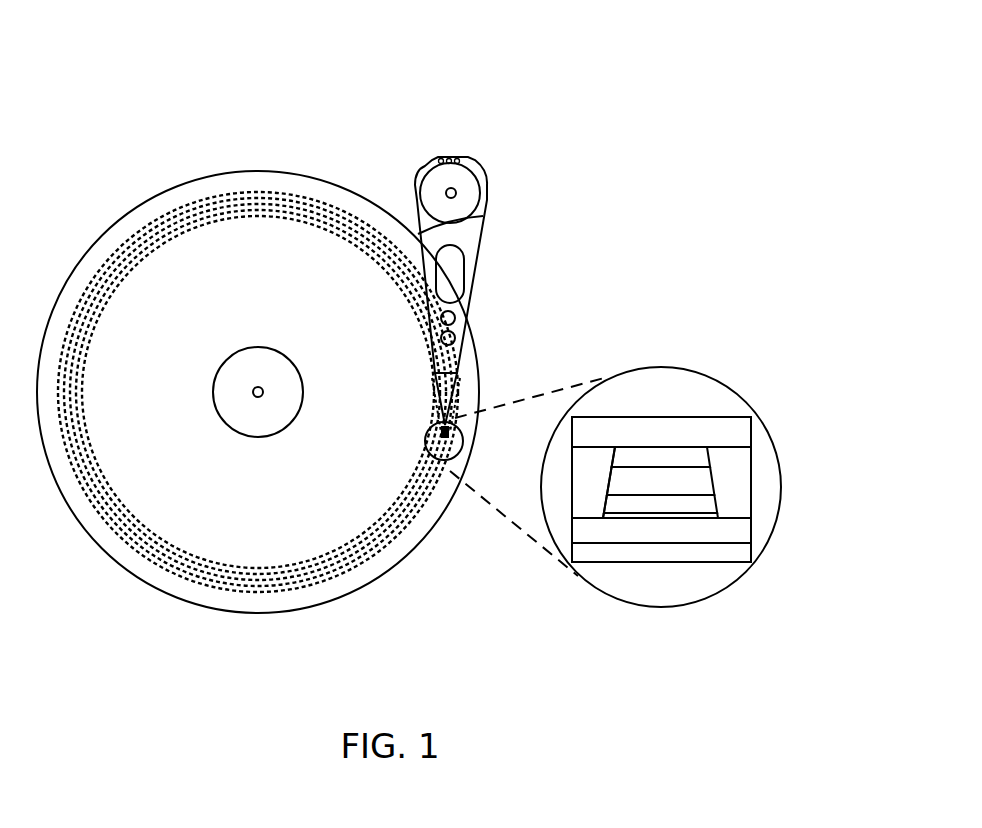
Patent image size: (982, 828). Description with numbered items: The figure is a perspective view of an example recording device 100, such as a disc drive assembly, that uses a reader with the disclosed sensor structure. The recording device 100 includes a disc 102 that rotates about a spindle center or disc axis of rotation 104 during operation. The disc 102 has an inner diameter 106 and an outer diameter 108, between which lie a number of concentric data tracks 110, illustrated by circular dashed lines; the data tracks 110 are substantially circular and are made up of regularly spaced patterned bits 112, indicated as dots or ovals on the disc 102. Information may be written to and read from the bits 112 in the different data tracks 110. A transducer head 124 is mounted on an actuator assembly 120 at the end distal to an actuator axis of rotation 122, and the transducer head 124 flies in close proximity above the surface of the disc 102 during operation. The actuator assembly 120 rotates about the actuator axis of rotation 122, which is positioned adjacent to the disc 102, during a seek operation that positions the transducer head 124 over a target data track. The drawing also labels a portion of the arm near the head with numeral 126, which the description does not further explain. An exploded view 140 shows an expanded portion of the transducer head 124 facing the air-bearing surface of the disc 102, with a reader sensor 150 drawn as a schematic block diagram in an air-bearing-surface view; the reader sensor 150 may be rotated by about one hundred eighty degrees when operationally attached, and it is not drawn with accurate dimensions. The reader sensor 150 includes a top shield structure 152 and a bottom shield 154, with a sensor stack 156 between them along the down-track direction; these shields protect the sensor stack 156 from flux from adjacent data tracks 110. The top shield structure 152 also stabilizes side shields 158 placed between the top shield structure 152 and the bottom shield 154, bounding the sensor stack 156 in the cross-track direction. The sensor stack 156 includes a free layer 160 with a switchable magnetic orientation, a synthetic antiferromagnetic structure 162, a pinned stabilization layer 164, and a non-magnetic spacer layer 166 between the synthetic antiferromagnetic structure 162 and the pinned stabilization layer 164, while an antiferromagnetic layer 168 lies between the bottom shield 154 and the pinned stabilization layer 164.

The recording device 100 is at (174, 70).
The disc 102 is at (298, 173).
The disc axis of rotation 104 is at (257, 391).
The inner diameter 106 is at (233, 355).
The outer diameter 108 is at (230, 192).
The data tracks 110 is at (97, 525).
The patterned bits 112 is at (210, 580).
The actuator assembly 120 is at (477, 250).
The actuator axis of rotation 122 is at (456, 191).
The transducer head 124 is at (441, 459).
The suspension 126 is at (440, 395).
The exploded view 140 is at (648, 367).
The reader sensor 150 is at (689, 390).
The top shield structure 152 is at (713, 416).
The bottom shield 154 is at (633, 563).
The sensor stack 156 is at (732, 479).
The side shields 158 is at (751, 512).
The free layer 160 is at (708, 460).
The synthetic antiferromagnetic (SAF) structure 162 is at (601, 481).
The pinned stabilization layer 164 is at (688, 522).
The non-magnetic spacer layer 166 is at (718, 506).
The antiferromagnetic (AFM) layer 168 is at (602, 545).